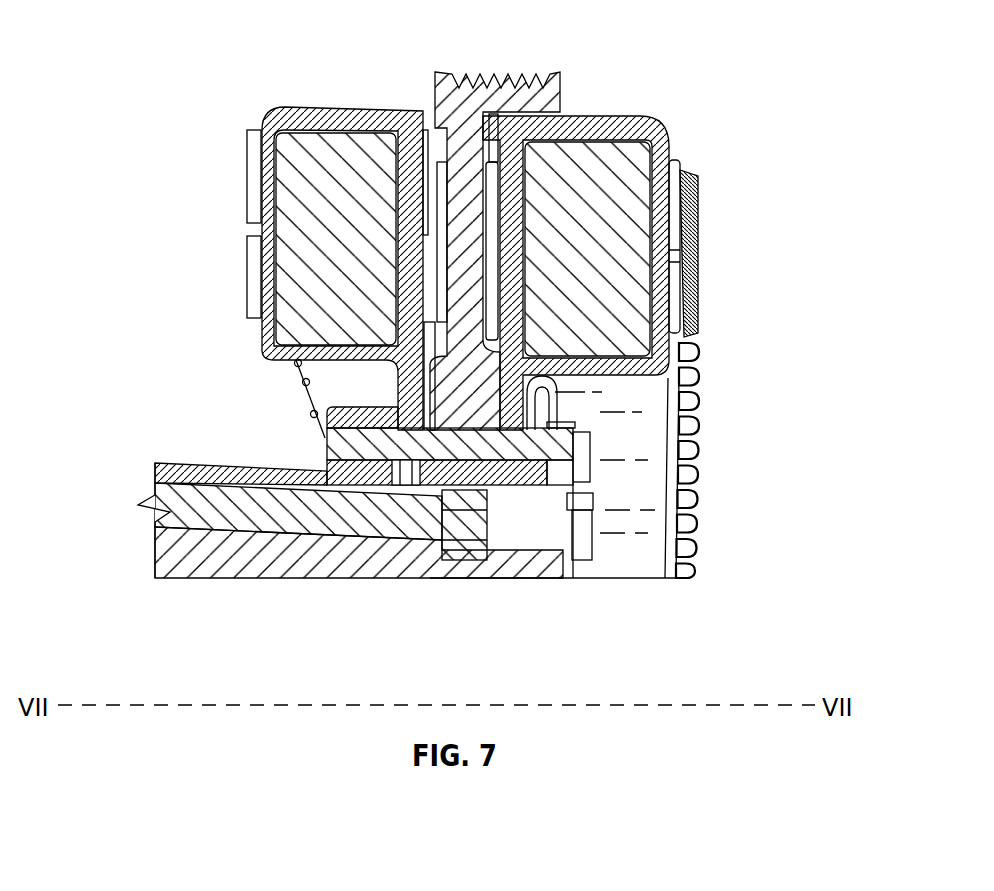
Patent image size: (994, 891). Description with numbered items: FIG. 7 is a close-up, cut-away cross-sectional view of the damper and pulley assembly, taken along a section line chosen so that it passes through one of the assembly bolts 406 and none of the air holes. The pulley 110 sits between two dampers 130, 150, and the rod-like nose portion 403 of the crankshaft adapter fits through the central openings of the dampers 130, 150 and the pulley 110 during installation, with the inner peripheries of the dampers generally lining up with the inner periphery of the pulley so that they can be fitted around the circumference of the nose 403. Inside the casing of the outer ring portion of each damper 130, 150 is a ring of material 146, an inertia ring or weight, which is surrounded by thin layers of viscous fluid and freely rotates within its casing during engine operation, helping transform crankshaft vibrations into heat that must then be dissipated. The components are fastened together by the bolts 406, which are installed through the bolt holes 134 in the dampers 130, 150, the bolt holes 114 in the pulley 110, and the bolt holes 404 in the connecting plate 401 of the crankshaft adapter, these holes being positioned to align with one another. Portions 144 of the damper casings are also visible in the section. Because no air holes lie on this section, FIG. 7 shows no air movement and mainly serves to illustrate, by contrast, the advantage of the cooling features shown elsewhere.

The pulley 110 is at (506, 46).
The bolt holes 114 is at (434, 585).
The damper 130 is at (491, 218).
The bolt holes 134 is at (410, 472).
The terminal 144 is at (258, 162).
The inertia ring 146 is at (300, 157).
The damper 150 is at (612, 78).
The connecting plate 401 is at (318, 414).
The nose portion 403 is at (175, 568).
The bolt holes 404 is at (345, 472).
The assembly bolts 406 is at (598, 458).